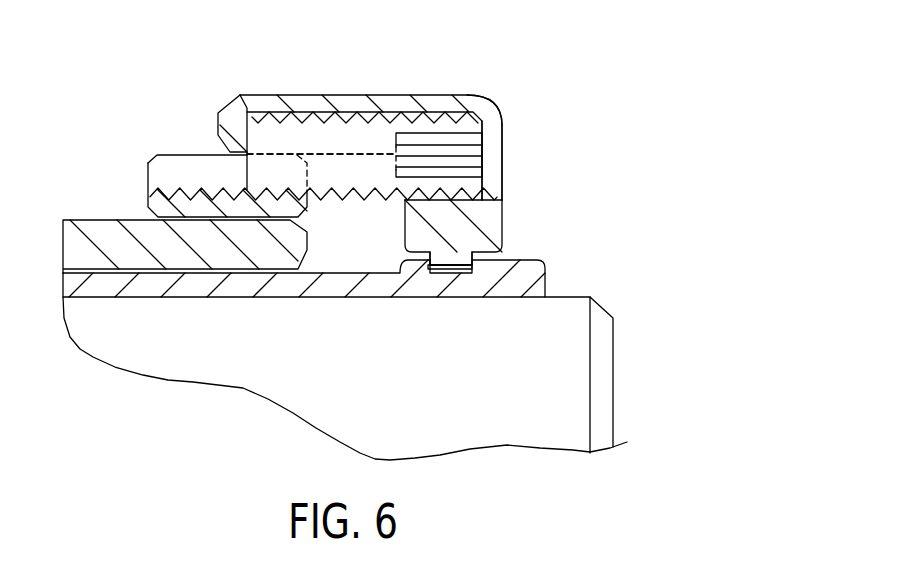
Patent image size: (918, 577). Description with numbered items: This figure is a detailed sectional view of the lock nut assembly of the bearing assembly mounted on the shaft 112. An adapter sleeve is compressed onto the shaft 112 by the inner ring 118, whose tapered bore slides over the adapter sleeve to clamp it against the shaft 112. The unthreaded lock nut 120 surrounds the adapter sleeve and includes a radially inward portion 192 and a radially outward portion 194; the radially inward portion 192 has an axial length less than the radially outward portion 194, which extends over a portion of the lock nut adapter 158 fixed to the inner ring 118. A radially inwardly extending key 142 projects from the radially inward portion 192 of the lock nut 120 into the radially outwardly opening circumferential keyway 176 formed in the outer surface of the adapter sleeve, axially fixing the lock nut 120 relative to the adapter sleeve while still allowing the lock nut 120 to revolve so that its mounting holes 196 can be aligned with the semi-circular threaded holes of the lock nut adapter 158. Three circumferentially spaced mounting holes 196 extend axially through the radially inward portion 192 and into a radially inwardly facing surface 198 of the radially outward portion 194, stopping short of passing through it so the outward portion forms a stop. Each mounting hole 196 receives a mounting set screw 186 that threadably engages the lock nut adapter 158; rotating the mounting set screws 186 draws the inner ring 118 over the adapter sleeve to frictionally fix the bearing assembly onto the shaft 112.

The shaft 112 is at (535, 415).
The inner ring 118 is at (299, 248).
The lock nut 120 is at (388, 94).
The radially inwardly extending key 142 is at (454, 254).
The lock nut adapter 158 is at (153, 159).
The radially outwardly opening circumferential keyway 176 is at (447, 272).
The mounting set screw 186 is at (485, 138).
The radially inward portion 192 is at (490, 221).
The radially outward portion 194 is at (470, 96).
The mounting hole 196 is at (490, 175).
The radially inwardly facing surface 198 is at (337, 157).